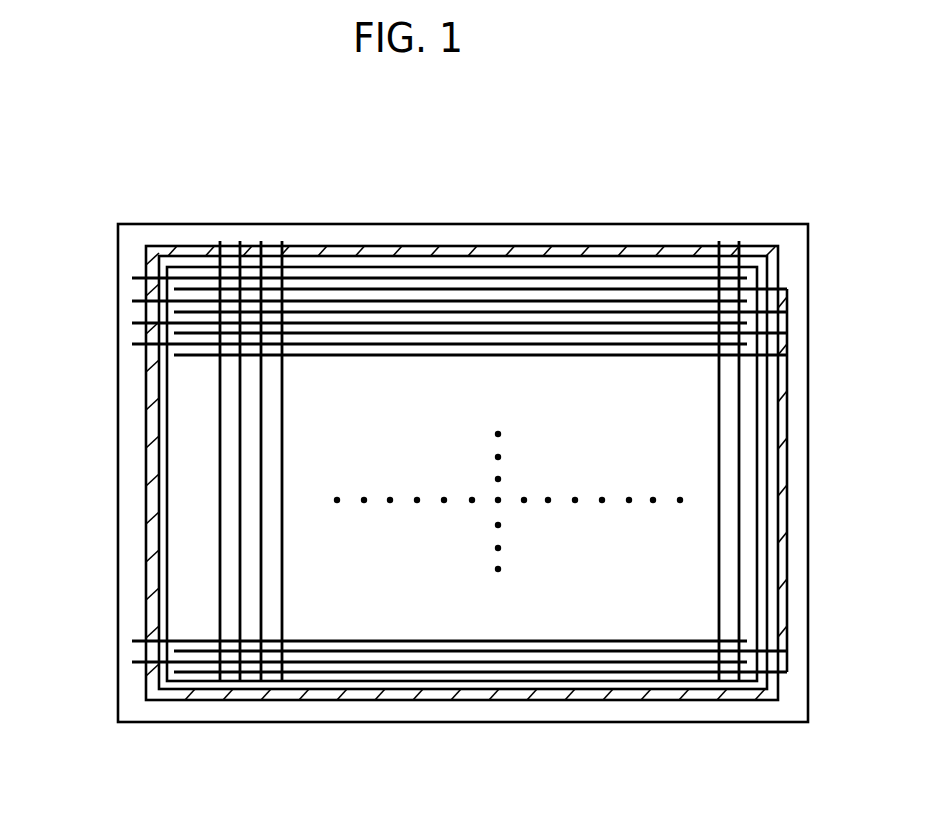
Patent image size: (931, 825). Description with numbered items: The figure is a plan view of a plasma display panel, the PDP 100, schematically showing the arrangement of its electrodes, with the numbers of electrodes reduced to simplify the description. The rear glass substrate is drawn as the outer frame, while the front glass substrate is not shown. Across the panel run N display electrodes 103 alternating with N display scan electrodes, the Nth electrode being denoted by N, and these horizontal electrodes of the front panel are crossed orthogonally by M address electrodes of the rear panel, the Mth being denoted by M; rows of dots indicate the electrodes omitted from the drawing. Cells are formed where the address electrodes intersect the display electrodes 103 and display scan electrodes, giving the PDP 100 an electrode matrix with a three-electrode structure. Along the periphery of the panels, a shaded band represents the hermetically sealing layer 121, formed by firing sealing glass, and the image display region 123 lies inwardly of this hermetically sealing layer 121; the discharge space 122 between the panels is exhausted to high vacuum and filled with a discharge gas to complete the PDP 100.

The PDP 100 is at (807, 502).
The display electrodes 103 is at (187, 357).
The hermetically sealing layer 121 is at (450, 253).
The discharge space 122 is at (548, 385).
The image display region 123 is at (165, 485).